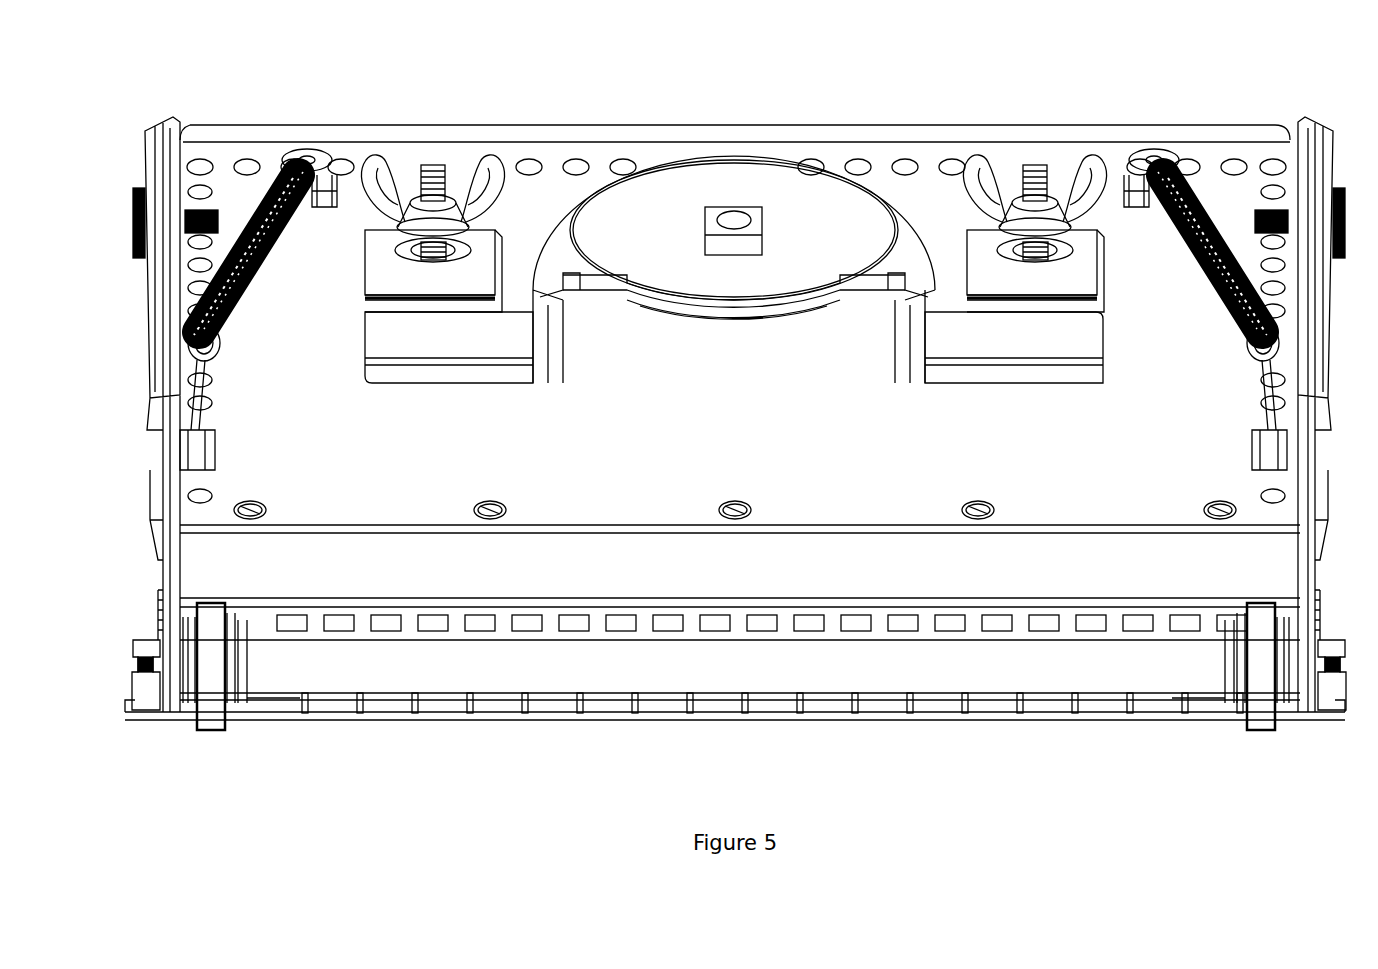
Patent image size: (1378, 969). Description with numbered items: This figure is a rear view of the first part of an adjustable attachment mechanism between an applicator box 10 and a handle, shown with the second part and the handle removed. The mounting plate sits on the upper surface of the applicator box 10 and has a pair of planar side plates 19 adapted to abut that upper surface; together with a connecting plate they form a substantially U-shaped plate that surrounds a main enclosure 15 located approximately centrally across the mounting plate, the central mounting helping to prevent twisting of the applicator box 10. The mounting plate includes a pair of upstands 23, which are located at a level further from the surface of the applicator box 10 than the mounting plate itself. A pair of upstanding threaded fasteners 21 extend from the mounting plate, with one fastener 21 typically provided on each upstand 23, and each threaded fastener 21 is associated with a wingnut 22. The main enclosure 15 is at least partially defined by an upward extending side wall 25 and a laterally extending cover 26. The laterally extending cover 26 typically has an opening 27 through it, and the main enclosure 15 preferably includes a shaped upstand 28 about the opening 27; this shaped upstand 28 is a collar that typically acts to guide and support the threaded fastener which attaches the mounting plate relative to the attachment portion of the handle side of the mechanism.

The applicator box 10 is at (378, 470).
The main enclosure 15 is at (665, 328).
The side plates 19 is at (408, 347).
The threaded fasteners 21 is at (438, 163).
The wingnut 22 is at (368, 158).
The upstands 23 is at (383, 280).
The upward extending side wall 25 is at (548, 236).
The laterally extending cover 26 is at (655, 205).
The opening 27 is at (733, 224).
The shaped upstand 28 is at (710, 210).